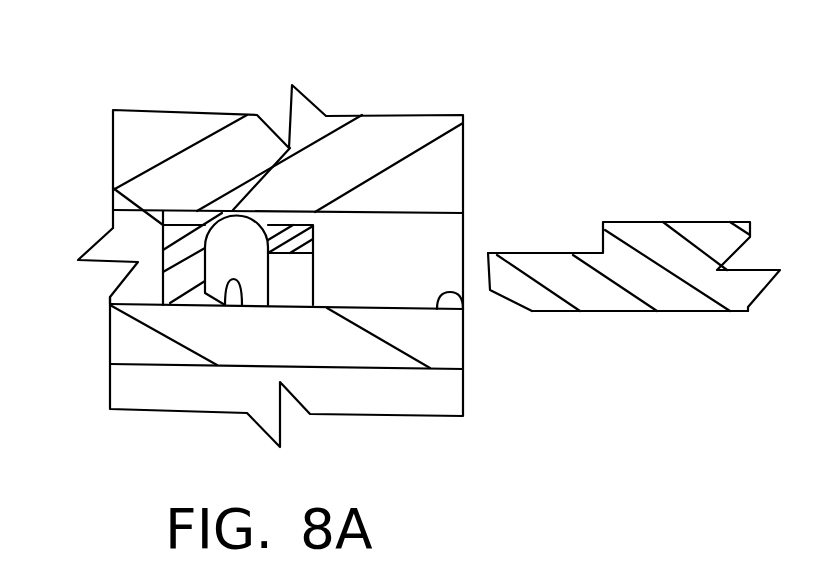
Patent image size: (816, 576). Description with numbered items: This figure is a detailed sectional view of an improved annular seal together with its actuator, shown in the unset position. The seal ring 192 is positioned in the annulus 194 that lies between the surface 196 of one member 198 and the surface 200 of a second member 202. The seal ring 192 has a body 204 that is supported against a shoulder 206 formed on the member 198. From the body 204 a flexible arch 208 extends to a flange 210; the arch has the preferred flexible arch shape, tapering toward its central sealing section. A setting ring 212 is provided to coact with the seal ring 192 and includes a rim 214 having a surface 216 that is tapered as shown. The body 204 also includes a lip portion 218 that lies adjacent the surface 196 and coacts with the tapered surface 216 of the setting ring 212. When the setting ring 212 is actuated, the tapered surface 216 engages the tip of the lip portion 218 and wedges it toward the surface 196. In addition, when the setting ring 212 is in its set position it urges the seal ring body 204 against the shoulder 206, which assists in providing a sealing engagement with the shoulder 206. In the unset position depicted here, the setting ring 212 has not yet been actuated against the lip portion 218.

The seal ring 192 is at (210, 242).
The annulus 194 is at (430, 287).
The surface 196 is at (463, 300).
The member 198 is at (463, 365).
The surface 200 is at (408, 212).
The member 202 is at (463, 140).
The body 204 is at (163, 293).
The shoulder 206 is at (172, 287).
The flexible arch 208 is at (236, 213).
The flange 210 is at (286, 232).
The setting ring 212 is at (633, 222).
The rim 214 is at (492, 268).
The tapered surface 216 is at (507, 292).
The lip portion 218 is at (243, 303).